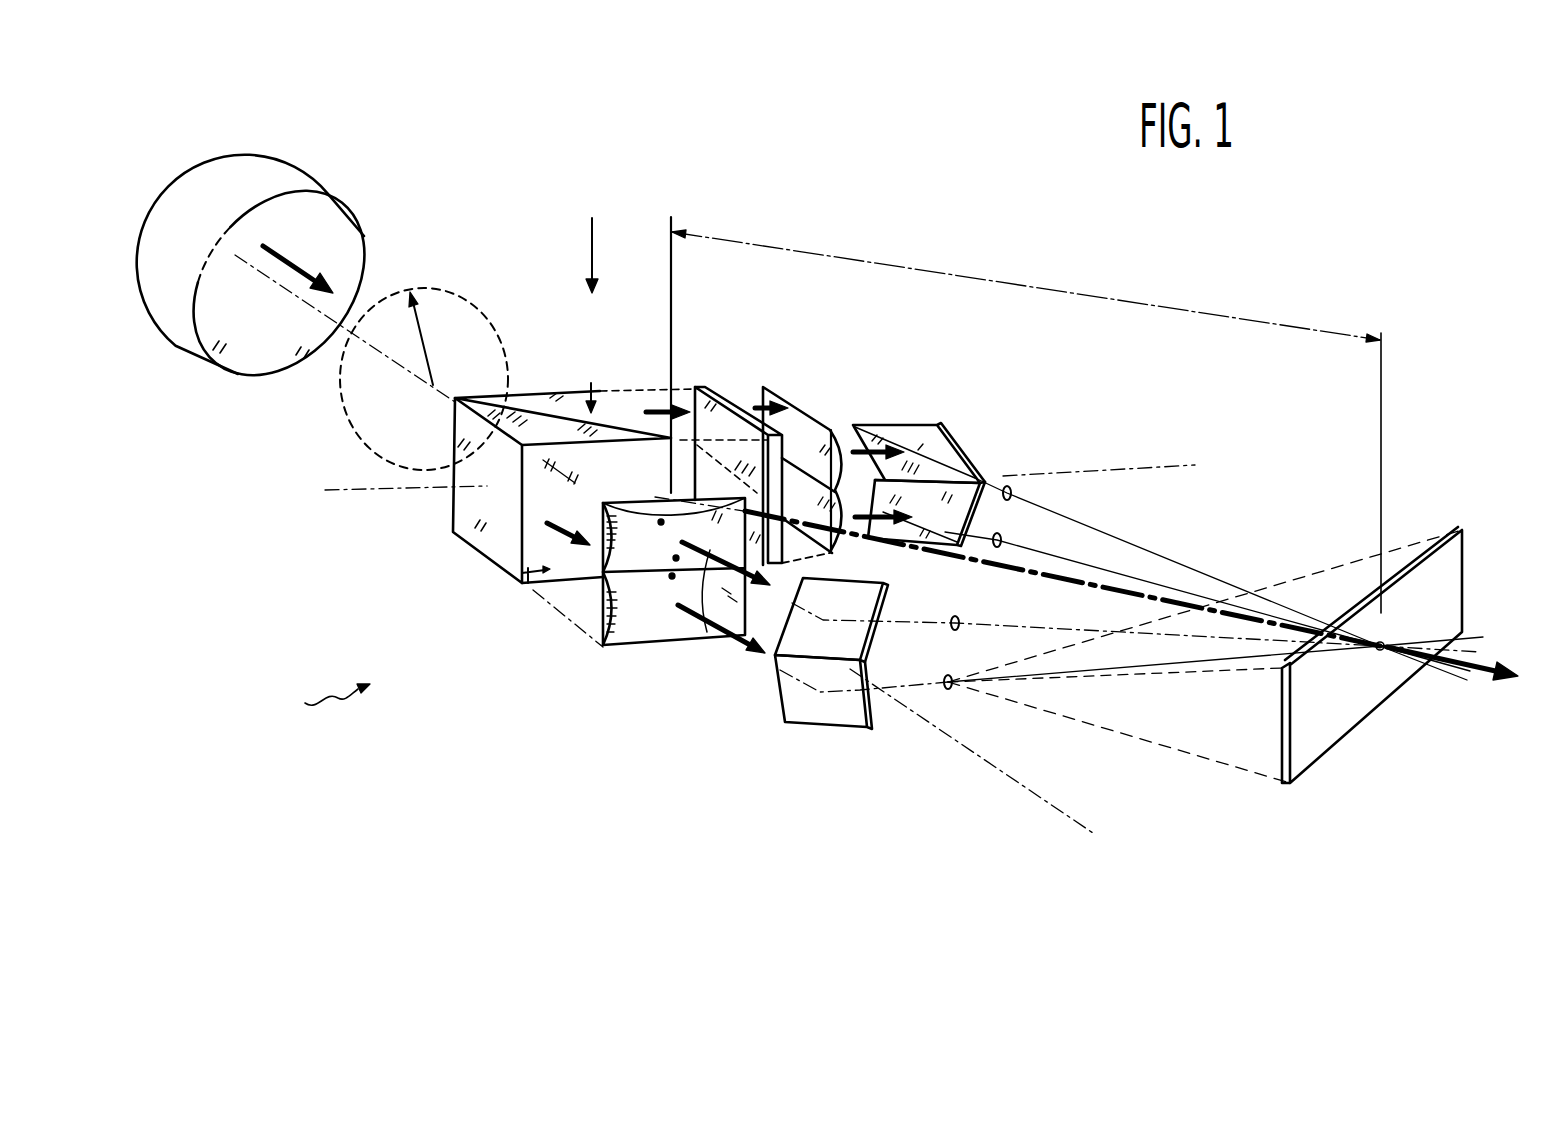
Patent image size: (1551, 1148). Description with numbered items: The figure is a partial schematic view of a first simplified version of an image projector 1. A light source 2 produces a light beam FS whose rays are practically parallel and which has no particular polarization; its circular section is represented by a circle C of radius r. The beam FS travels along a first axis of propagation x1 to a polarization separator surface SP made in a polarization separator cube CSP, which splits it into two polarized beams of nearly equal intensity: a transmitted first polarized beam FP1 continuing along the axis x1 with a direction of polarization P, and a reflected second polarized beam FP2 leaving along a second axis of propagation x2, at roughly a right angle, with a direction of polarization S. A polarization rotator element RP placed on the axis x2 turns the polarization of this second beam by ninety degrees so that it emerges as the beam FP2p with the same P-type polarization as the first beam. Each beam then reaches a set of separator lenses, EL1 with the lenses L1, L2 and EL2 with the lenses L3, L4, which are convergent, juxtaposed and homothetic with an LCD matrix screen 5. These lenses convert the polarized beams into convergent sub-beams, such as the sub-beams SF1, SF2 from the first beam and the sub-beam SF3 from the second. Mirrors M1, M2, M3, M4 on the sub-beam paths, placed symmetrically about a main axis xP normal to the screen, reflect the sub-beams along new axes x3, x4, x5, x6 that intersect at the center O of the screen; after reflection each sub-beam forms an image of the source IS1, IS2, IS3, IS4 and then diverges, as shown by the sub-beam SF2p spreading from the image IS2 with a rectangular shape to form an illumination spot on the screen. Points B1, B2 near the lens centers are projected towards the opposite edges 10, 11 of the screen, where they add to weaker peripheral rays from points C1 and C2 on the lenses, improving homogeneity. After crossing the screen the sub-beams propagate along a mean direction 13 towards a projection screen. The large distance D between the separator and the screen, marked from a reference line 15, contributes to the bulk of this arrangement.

The image projector 1 is at (323, 693).
The light source 2 is at (274, 172).
The LCD matrix screen 5 is at (1372, 571).
The edge of the matrix screen 10 is at (1365, 712).
The edge of the matrix screen 11 is at (1358, 605).
The mean direction 13 is at (1480, 660).
The reference plane marker arrow 15 is at (594, 238).
The light beam FS is at (300, 263).
The circle C is at (490, 303).
The radius r is at (422, 318).
The polarization separator cube CSP is at (521, 478).
The polarization separator surface SP is at (512, 405).
The direction of polarization S is at (580, 382).
The first polarized beam FP1 is at (535, 527).
The second polarized beam FP2 is at (642, 405).
The second polarized beam after rotation FP2p is at (755, 405).
The direction of polarization P is at (530, 585).
The first axis of propagation x1 is at (353, 331).
The second axis of propagation x2 is at (354, 489).
The new axis of propagation x3 is at (883, 624).
The new axis of propagation x4 is at (948, 682).
The new axis of propagation x5 is at (1122, 540).
The new axis of propagation x6 is at (1180, 588).
The main axis xP is at (1066, 588).
The distance D is at (1026, 286).
The set of separator lenses EL1 is at (660, 621).
The separator lens L1 is at (603, 553).
The separator lens L2 is at (604, 612).
The point B1 is at (676, 560).
The point B2 is at (672, 578).
The point C1 is at (661, 520).
The point C2 is at (668, 640).
The sub-beam SF1 is at (712, 645).
The sub-beam SF2 is at (735, 650).
The diverging sub-beam SF2p is at (1200, 750).
The sub-beam SF3 is at (866, 445).
The polarization rotator element RP is at (704, 386).
The set of separator lenses EL2 is at (846, 447).
The separator lens L3 is at (835, 395).
The separator lens L4 is at (843, 548).
The mirror M1 is at (883, 603).
The mirror M2 is at (830, 727).
The mirror M3 is at (935, 433).
The mirror M4 is at (975, 500).
The image of the source IS1 is at (955, 620).
The image of the source IS2 is at (950, 688).
The image of the source IS3 is at (1013, 491).
The image of the source IS4 is at (997, 540).
The center of the matrix screen O is at (1395, 665).